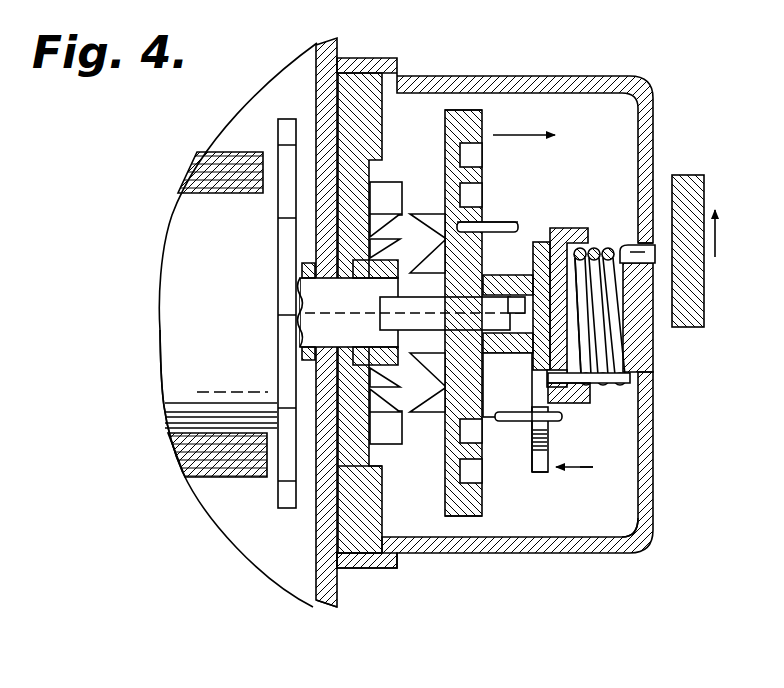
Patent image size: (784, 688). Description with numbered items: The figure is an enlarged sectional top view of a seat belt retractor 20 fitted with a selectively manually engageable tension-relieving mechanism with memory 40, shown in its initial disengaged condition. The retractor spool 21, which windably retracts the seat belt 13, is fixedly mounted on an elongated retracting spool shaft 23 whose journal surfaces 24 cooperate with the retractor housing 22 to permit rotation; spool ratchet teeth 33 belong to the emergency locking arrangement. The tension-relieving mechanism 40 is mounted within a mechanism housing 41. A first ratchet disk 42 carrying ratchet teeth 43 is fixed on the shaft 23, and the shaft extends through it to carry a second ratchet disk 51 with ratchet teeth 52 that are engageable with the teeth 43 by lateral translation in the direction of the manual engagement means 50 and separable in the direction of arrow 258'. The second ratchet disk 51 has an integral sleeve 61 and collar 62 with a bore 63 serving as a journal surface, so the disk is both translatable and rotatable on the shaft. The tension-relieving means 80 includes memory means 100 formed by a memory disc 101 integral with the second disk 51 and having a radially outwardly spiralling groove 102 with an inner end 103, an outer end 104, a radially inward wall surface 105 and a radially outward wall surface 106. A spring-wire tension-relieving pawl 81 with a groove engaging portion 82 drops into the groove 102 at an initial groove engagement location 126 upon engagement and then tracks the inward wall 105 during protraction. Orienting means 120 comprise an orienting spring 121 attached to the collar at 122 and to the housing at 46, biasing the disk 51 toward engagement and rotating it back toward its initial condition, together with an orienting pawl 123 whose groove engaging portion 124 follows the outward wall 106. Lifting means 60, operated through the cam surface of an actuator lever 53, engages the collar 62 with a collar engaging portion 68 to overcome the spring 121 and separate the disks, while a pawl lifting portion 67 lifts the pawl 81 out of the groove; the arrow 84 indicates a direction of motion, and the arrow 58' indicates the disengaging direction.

The seat belt 13 is at (200, 160).
The seat belt retractor 20 is at (255, 494).
The retractor spool 21 is at (173, 300).
The retractor housing 22 is at (328, 83).
The retracting spool shaft 23 is at (317, 310).
The journal surfaces 24 is at (307, 273).
The spool ratchet teeth 33 is at (282, 132).
The tension-relieving mechanism with memory 40 is at (625, 553).
The mechanism housing 41 is at (603, 80).
The first ratchet disk 42 is at (360, 200).
The ratchet teeth 43 is at (377, 247).
The housing attachment point 46 is at (650, 247).
The manual engagement means 50 is at (331, 644).
The second ratchet disk 51 is at (447, 490).
The ratchet teeth 52 is at (352, 388).
The actuator lever 53 is at (705, 313).
The disengagement direction arrow 58' is at (737, 252).
The lifting means 60 is at (554, 484).
The sleeve 61 is at (548, 345).
The collar 62 is at (572, 237).
The bore 63 is at (510, 308).
The pawl lifting portion 67 is at (537, 473).
The collar engaging portion 68 is at (540, 245).
The tension-relieving means 80 is at (565, 427).
The tension-relieving pawl 81 is at (562, 421).
The groove engaging portion 82 is at (519, 442).
The direction arrow 84 is at (580, 470).
The memory means 100 is at (473, 530).
The memory disc 101 is at (420, 508).
The spiralling groove 102 is at (470, 502).
The inner end 103 is at (482, 493).
The outer end 104 is at (487, 193).
The radially inward wall surface 105 is at (494, 242).
The radially outward wall surface 106 is at (430, 553).
The orienting means 120 is at (602, 240).
The orienting spring 121 is at (612, 250).
The collar attachment point 122 is at (590, 382).
The orienting pawl 123 is at (512, 227).
The groove engaging portion 124 is at (445, 170).
The initial groove engagement location 126 is at (470, 413).
The disengagement direction arrow 258' is at (530, 85).